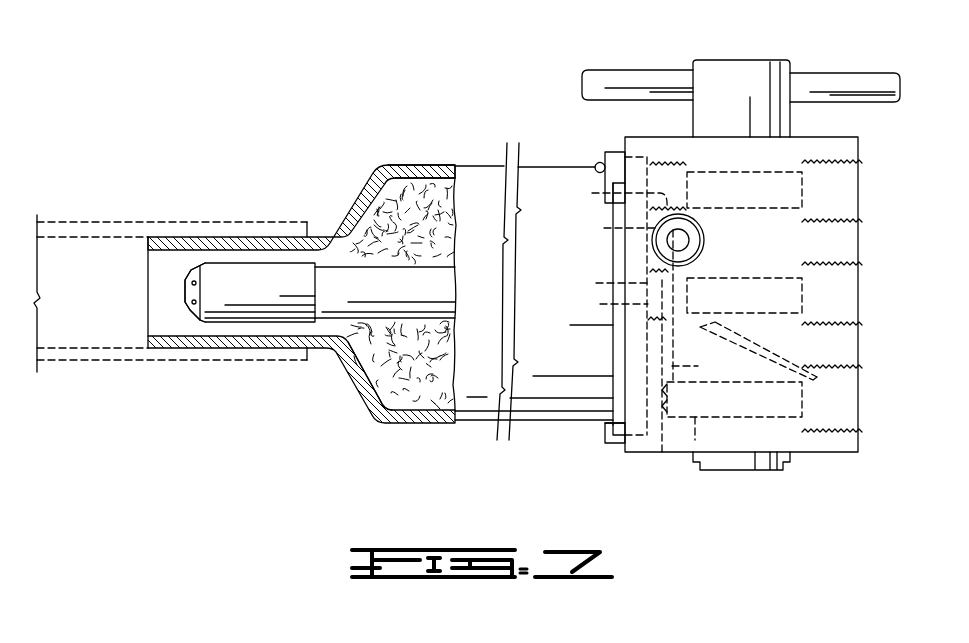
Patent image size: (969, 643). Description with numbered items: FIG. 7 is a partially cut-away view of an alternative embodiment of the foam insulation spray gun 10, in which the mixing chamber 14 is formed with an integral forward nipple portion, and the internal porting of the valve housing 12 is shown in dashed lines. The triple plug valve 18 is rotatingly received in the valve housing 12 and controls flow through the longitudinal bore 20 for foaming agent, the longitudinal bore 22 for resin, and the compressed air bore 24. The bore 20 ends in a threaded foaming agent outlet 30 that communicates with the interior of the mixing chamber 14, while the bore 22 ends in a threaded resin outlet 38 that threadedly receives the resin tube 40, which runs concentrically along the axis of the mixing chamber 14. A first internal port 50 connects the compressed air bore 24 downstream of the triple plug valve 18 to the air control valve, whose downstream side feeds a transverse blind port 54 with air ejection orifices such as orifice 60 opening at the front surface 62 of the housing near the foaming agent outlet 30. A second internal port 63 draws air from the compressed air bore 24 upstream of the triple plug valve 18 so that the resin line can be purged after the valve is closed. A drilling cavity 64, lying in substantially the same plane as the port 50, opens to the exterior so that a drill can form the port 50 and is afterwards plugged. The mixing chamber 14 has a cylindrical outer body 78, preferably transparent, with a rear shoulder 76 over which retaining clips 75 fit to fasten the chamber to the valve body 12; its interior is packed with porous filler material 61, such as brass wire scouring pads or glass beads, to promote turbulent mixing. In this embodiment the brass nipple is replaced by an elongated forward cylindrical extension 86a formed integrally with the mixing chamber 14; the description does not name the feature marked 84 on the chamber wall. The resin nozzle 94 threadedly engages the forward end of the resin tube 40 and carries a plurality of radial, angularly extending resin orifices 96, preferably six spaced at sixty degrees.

The foam insulation spray gun 10 is at (513, 98).
The valve housing 12 is at (818, 452).
The mixing chamber 14 is at (483, 426).
The triple plug valve 18 is at (709, 58).
The longitudinal bore 20 is at (735, 177).
The longitudinal bore 22 is at (736, 283).
The compressed air bore 24 is at (756, 389).
The threaded foaming agent outlet 30 is at (616, 195).
The threaded resin outlet 38 is at (611, 305).
The resin tube 40 is at (432, 296).
The first internal port 50 is at (698, 367).
The transverse blind port 54 is at (688, 240).
The air ejection orifice 60 is at (617, 227).
The porous filler material 61 is at (408, 370).
The front surface 62 is at (609, 282).
The second internal port 63 is at (758, 353).
The drilling cavity 64 is at (693, 438).
The retaining clips 75 is at (607, 158).
The shoulder 76 is at (607, 426).
The cylindrical outer body 78 is at (425, 165).
The housing wall 84 is at (357, 391).
The elongated forward cylindrical extension 86a is at (215, 350).
The resin nozzle 94 is at (183, 290).
The resin orifices 96 is at (197, 302).